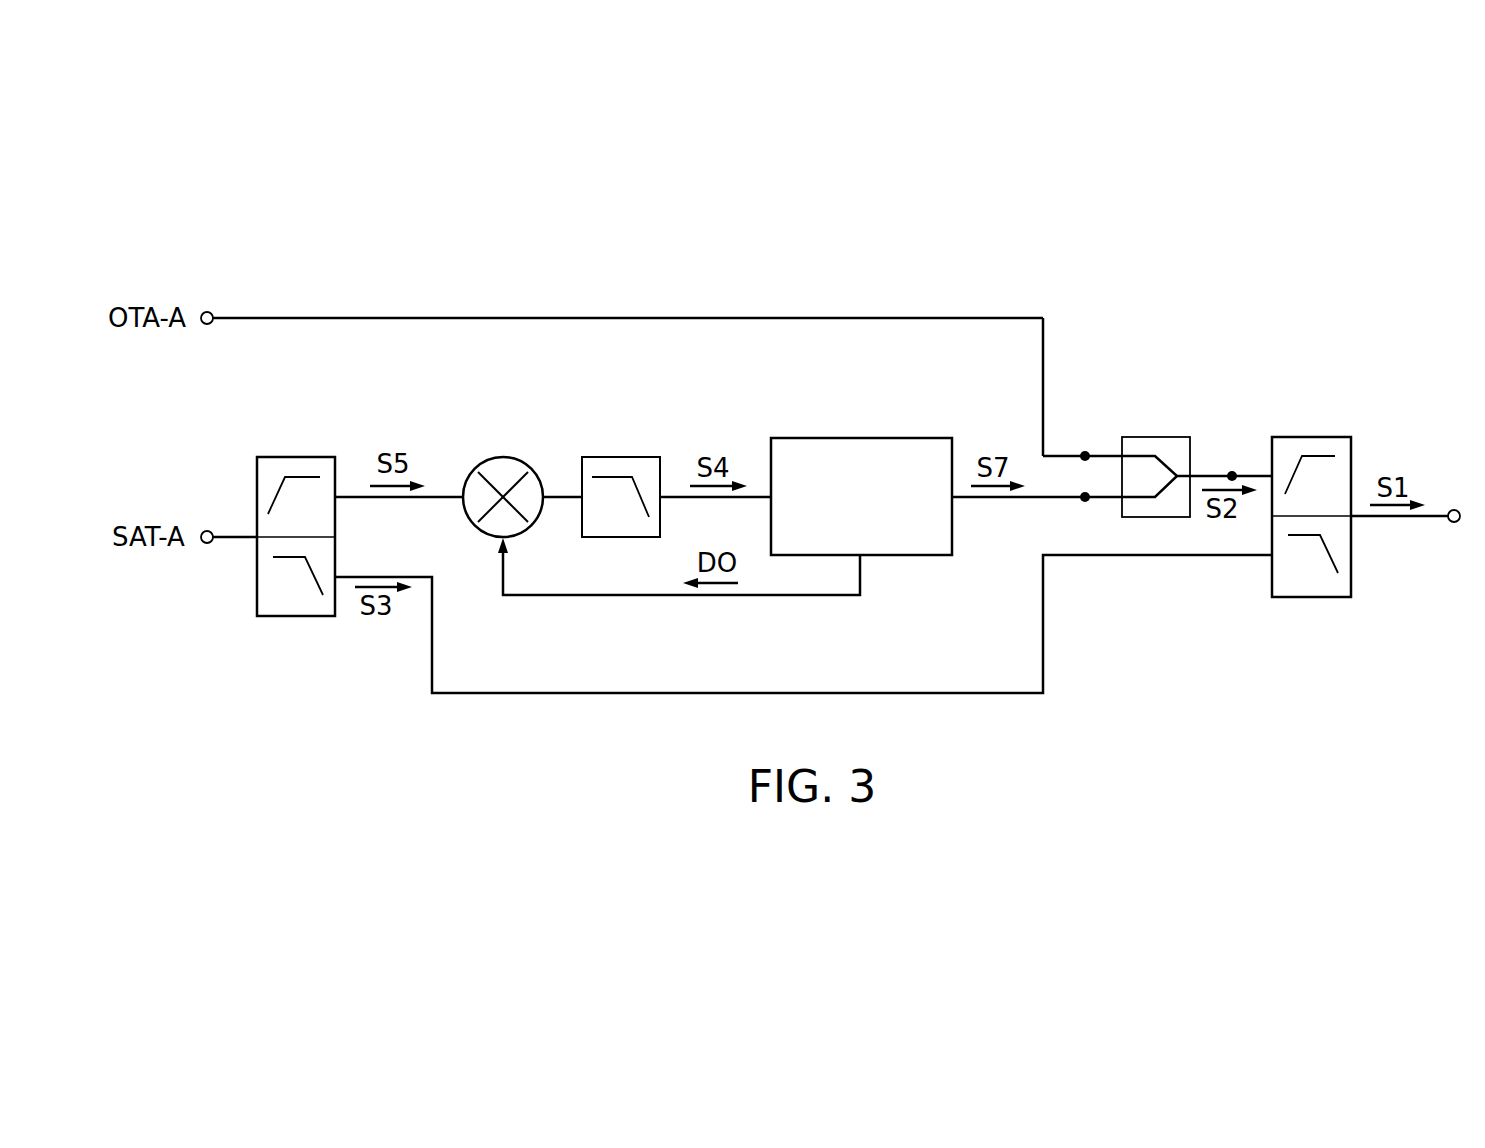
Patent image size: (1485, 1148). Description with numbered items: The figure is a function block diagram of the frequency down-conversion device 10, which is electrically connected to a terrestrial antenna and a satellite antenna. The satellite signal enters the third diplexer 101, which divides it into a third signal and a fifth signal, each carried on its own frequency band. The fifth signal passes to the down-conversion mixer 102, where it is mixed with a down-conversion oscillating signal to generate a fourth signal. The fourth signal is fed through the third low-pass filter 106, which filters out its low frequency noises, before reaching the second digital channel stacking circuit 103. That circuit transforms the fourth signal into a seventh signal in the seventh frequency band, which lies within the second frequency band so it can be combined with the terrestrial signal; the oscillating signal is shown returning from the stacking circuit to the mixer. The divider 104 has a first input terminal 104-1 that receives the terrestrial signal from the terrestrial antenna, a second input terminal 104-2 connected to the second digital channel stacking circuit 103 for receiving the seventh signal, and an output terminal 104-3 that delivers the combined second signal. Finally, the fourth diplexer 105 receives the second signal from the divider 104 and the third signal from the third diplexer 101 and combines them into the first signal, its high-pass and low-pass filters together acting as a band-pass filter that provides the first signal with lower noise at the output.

The frequency down-conversion device 10 is at (512, 266).
The third diplexer 101 is at (257, 592).
The down-conversion mixer 102 is at (507, 456).
The second digital channel stacking circuit 103 is at (860, 438).
The divider 104 is at (1160, 437).
The first input terminal 104-1 is at (1086, 456).
The second input terminal 104-2 is at (1086, 502).
The output terminal 104-3 is at (1232, 471).
The fourth diplexer 105 is at (1351, 555).
The third low-pass filter 106 is at (622, 457).